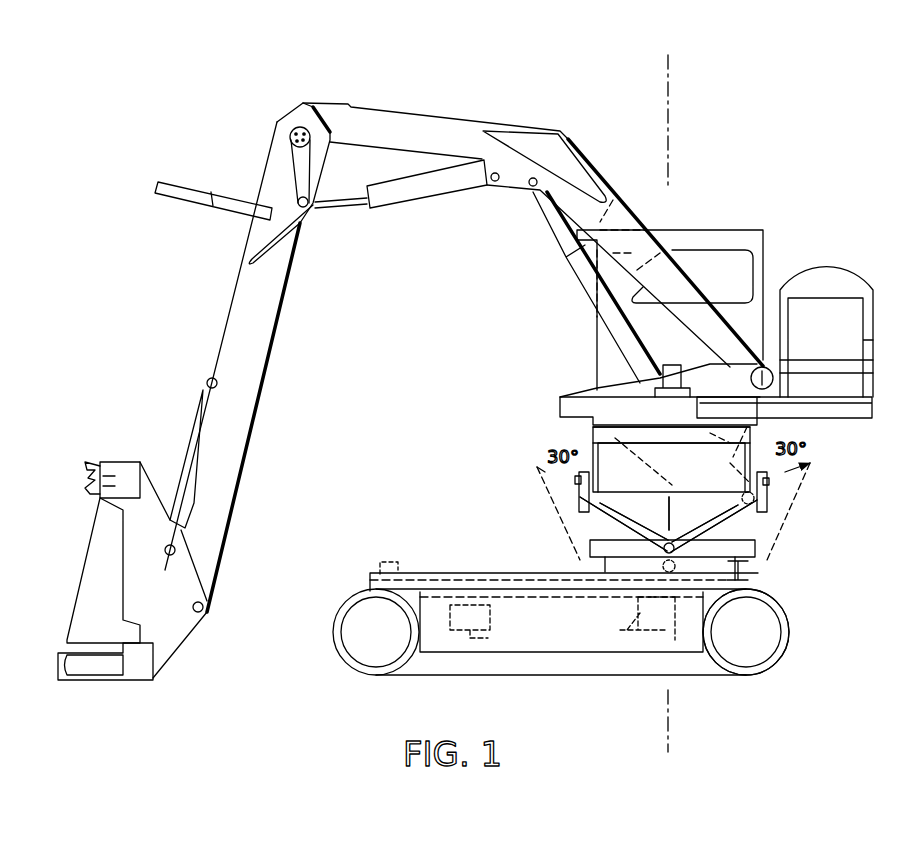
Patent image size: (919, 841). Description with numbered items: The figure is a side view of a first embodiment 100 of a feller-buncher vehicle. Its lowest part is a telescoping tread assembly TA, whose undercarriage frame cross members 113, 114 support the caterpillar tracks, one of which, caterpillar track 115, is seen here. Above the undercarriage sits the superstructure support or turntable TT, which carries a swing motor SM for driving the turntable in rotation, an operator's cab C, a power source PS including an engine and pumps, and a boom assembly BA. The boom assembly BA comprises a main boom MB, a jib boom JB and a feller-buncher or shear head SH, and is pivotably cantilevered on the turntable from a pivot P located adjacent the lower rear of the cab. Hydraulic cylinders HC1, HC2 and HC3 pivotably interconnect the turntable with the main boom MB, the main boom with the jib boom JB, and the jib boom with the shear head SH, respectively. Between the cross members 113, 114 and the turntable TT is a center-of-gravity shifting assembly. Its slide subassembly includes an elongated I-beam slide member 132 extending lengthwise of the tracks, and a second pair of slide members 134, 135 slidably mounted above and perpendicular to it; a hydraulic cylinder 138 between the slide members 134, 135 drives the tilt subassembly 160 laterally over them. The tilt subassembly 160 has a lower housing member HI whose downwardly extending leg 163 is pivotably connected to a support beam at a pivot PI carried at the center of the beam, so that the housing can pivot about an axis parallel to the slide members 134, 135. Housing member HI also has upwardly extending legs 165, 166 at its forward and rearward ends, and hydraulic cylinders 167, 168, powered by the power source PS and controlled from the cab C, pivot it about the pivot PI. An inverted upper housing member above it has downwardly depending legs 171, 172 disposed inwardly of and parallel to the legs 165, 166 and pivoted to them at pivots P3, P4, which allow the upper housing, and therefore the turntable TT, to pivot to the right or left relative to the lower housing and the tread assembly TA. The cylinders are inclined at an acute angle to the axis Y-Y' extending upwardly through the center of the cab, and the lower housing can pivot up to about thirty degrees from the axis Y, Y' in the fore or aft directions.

The first embodiment 100 is at (710, 124).
The boom assembly BA is at (258, 121).
The main boom MB is at (437, 140).
The jib boom JB is at (243, 313).
The hydraulic cylinder HC1 is at (587, 288).
The hydraulic cylinder HC2 is at (395, 192).
The hydraulic cylinder HC3 is at (193, 448).
The shear head SH is at (168, 625).
The operator's cab C is at (730, 242).
The pivot P is at (760, 368).
The power source PS is at (826, 284).
The swing motor SM is at (670, 403).
The turntable TT is at (600, 423).
The telescoping tread assembly TA is at (565, 682).
The axis Y-Y' Y is at (666, 106).
The axis Y- Y' is at (667, 736).
The undercarriage frame cross member 113 is at (491, 623).
The undercarriage frame cross member 114 is at (638, 620).
The caterpillar track 115 is at (790, 632).
The slide member 132 is at (427, 575).
The slide member 134 is at (603, 570).
The slide member 135 is at (755, 572).
The hydraulic cylinder 138 is at (677, 565).
The tilt subassembly 160 is at (505, 463).
The leg 163 is at (695, 529).
The upper leg 165 is at (577, 500).
The upper leg 166 is at (763, 500).
The hydraulic cylinder 167 is at (607, 520).
The hydraulic cylinder 168 is at (745, 517).
The leg 171 is at (588, 462).
The leg 172 is at (745, 462).
The lower housing member HI is at (668, 520).
The pivot PI is at (665, 545).
The pivot P3 is at (583, 480).
The pivot P4 is at (768, 482).